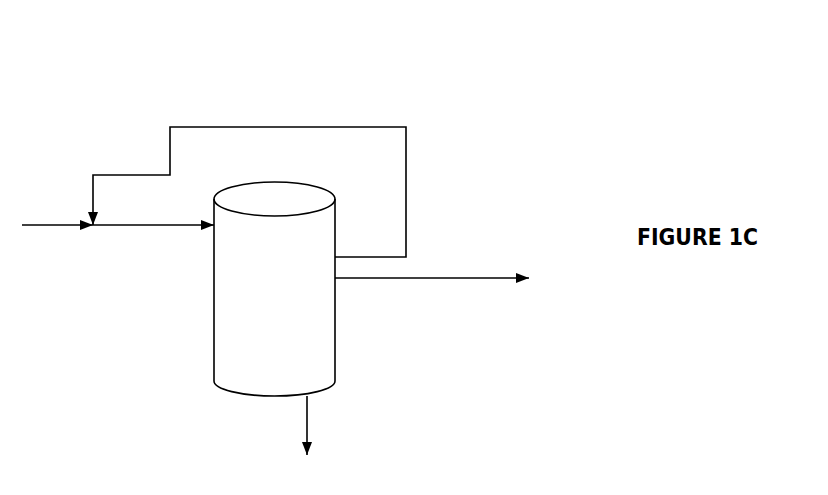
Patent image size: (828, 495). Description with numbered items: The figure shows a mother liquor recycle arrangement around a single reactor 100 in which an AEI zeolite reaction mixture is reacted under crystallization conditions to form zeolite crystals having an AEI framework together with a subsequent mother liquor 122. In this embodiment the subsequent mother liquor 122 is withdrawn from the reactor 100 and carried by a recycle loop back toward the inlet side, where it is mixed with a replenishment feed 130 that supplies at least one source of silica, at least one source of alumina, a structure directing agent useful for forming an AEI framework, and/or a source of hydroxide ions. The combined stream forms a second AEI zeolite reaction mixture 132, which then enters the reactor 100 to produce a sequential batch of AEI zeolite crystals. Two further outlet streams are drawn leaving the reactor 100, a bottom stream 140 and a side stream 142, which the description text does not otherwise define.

The reactor 100 is at (337, 313).
The subsequent mother liquor 122 is at (406, 177).
The replenishment feed 130 is at (58, 227).
The second AEI zeolite reaction mixture 132 is at (148, 227).
The bottom product stream 140 is at (308, 420).
The overhead product stream 142 is at (485, 277).